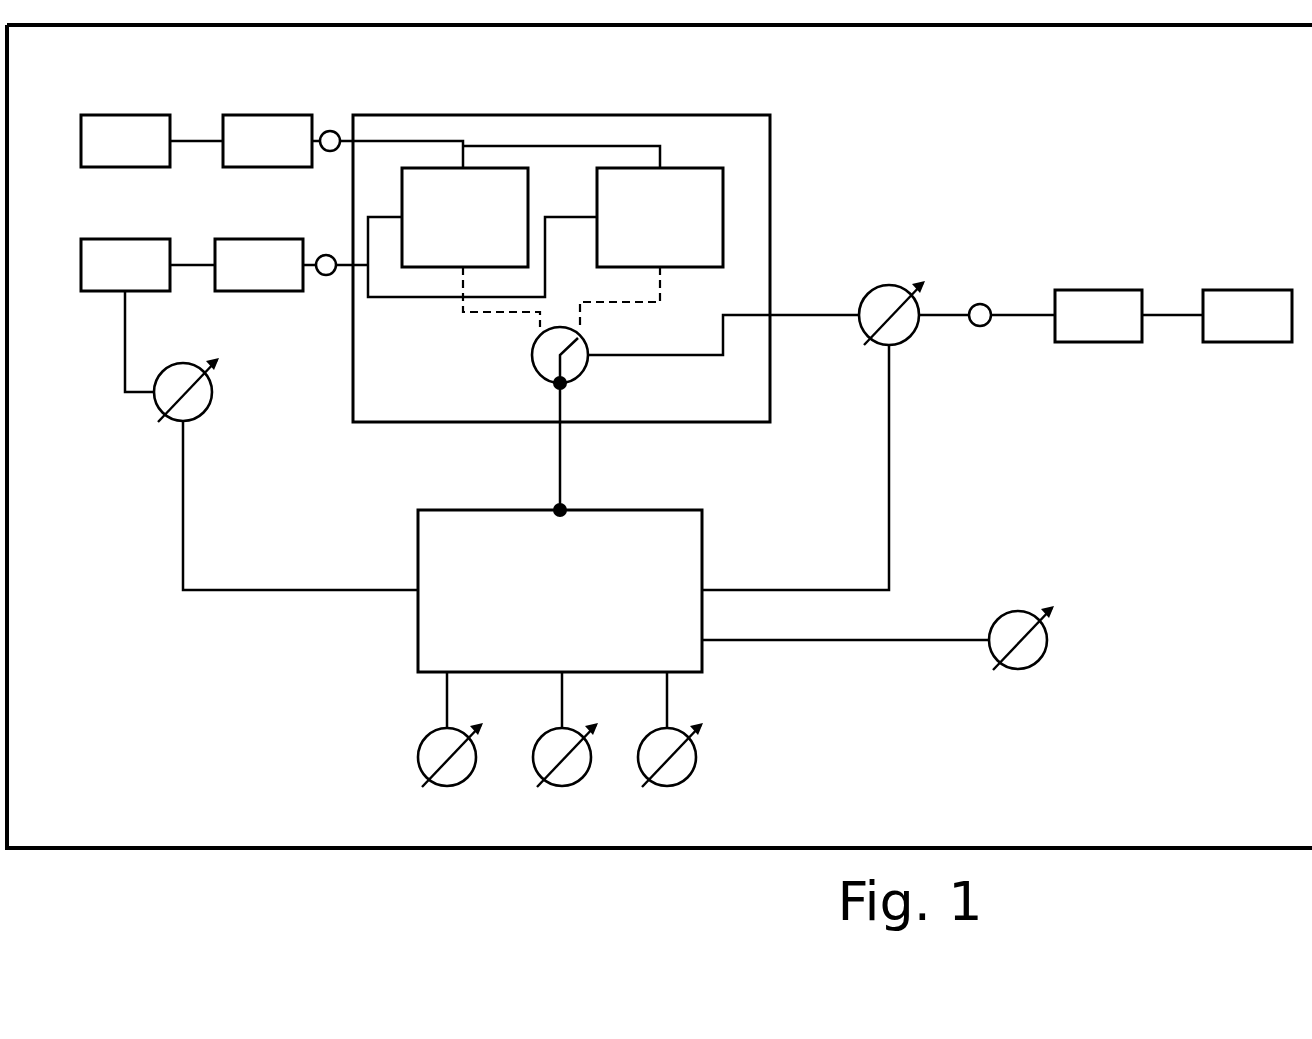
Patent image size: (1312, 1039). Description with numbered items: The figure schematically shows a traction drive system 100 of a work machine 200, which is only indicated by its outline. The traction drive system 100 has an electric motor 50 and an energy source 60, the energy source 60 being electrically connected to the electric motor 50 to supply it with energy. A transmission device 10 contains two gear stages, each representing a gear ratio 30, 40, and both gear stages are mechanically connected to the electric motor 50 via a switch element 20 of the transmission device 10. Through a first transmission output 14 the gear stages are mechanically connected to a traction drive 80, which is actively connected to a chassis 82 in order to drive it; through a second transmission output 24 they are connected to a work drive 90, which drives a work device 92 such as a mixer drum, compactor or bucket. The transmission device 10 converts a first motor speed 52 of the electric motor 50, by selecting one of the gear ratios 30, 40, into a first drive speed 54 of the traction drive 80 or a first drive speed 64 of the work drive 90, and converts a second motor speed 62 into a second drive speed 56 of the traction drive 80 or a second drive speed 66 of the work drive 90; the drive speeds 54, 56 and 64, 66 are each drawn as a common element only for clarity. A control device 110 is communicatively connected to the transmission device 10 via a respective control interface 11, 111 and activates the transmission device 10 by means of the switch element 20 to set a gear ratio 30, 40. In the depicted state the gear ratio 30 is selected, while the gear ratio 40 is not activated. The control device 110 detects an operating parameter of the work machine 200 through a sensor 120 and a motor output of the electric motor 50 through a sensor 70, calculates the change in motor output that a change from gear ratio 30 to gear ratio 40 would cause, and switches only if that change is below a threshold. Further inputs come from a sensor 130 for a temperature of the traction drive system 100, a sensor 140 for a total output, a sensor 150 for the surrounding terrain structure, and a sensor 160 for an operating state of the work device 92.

The transmission device 10 is at (561, 268).
The control interface 11 is at (567, 384).
The first transmission output 14 is at (341, 145).
The switch element 20 is at (533, 366).
The second transmission output 24 is at (352, 262).
The gear ratio 30 is at (465, 217).
The gear ratio 40 is at (660, 217).
The electric motor 50 is at (1098, 316).
The first motor speed 52 is at (1001, 290).
The first drive speed 54 is at (348, 108).
The second drive speed 56 is at (333, 131).
The energy source 60 is at (1217, 316).
The second motor speed 62 is at (980, 303).
The first drive speed 64 is at (320, 298).
The second drive speed 66 is at (326, 276).
The sensor 70 is at (889, 283).
The traction drive 80 is at (241, 141).
The chassis 82 is at (125, 141).
The work drive 90 is at (236, 265).
The work device 92 is at (125, 265).
The traction drive system 100 is at (561, 240).
The control device 110 is at (560, 591).
The control interface 111 is at (566, 507).
The sensor 120 is at (1045, 645).
The sensor 130 is at (420, 765).
The sensor 140 is at (570, 786).
The sensor 150 is at (680, 786).
The sensor 160 is at (166, 417).
The work machine 200 is at (659, 436).